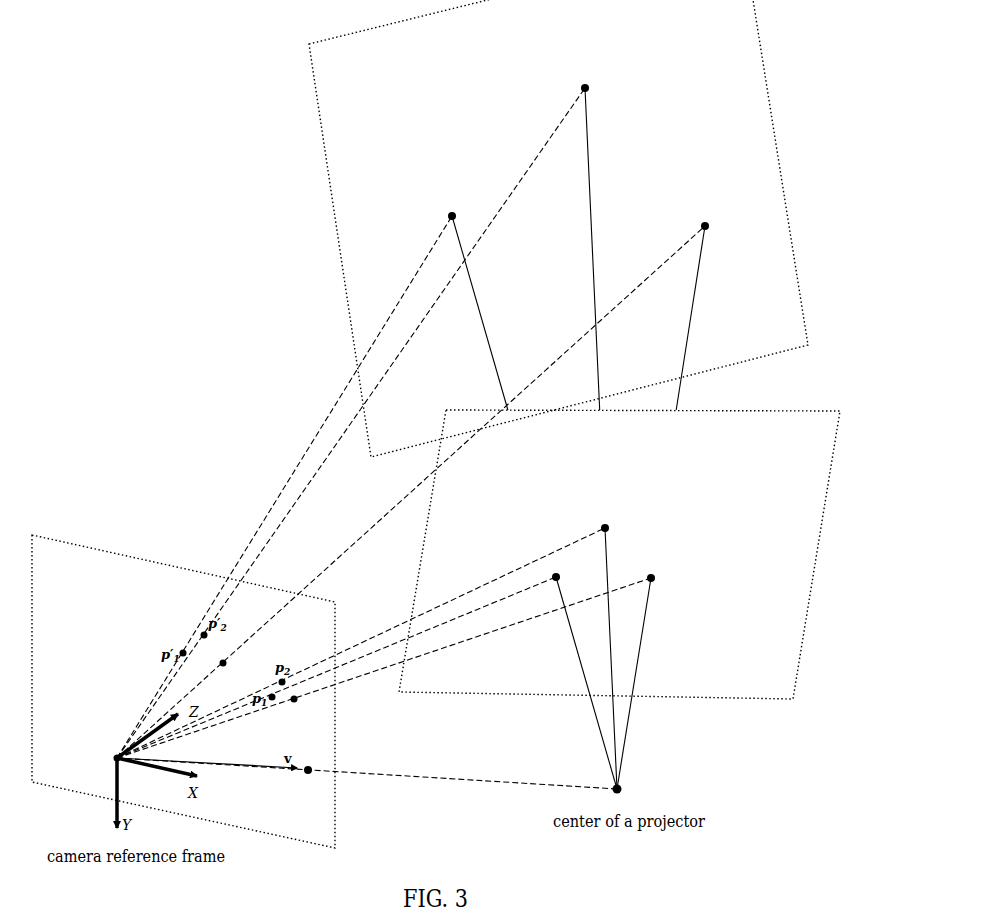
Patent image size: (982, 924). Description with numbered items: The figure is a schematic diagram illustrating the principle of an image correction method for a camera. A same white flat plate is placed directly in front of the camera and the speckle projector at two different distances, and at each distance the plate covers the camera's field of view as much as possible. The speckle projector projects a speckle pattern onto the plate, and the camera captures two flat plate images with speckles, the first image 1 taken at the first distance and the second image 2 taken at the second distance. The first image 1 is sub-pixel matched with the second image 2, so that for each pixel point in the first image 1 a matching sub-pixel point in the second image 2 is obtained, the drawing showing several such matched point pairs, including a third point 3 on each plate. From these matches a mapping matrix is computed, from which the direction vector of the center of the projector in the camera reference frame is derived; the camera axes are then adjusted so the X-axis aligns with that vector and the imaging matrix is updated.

The first image 1 is at (558, 228).
The second image 2 is at (619, 554).
The third projected point (p3, p'3) and its rays 3 is at (411, 492).